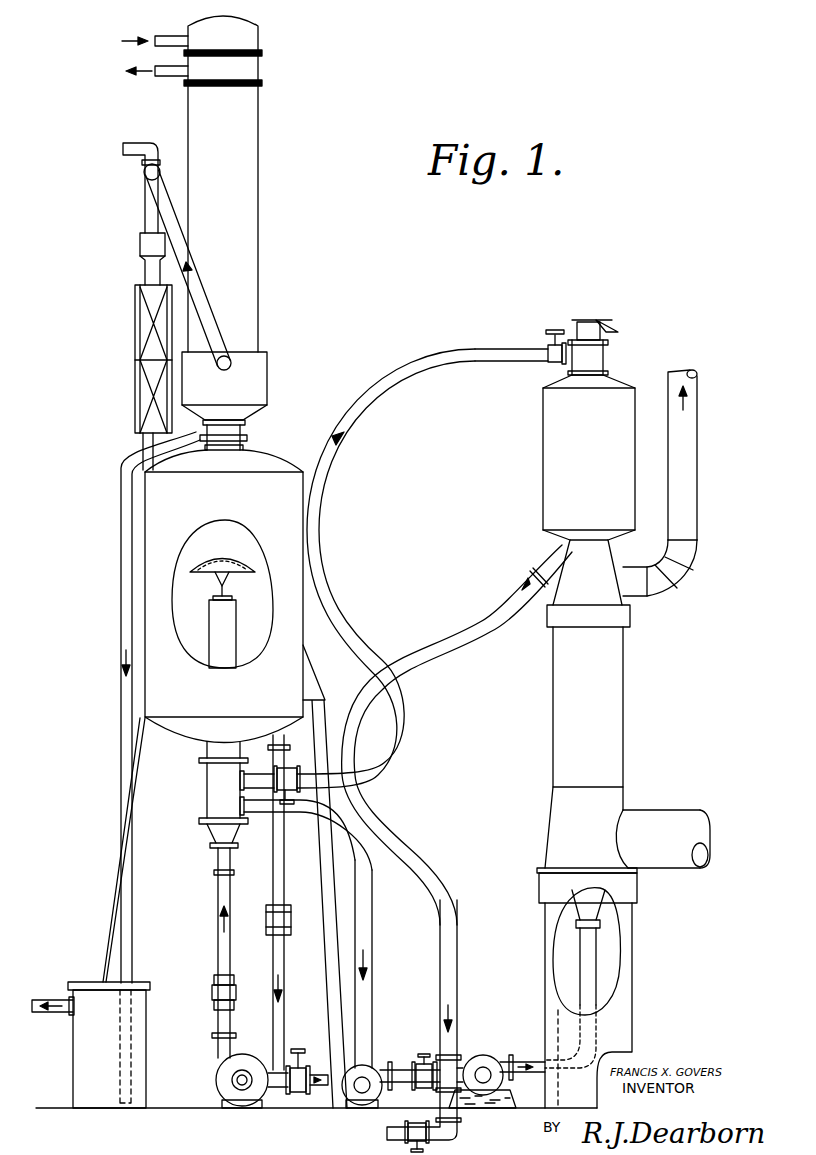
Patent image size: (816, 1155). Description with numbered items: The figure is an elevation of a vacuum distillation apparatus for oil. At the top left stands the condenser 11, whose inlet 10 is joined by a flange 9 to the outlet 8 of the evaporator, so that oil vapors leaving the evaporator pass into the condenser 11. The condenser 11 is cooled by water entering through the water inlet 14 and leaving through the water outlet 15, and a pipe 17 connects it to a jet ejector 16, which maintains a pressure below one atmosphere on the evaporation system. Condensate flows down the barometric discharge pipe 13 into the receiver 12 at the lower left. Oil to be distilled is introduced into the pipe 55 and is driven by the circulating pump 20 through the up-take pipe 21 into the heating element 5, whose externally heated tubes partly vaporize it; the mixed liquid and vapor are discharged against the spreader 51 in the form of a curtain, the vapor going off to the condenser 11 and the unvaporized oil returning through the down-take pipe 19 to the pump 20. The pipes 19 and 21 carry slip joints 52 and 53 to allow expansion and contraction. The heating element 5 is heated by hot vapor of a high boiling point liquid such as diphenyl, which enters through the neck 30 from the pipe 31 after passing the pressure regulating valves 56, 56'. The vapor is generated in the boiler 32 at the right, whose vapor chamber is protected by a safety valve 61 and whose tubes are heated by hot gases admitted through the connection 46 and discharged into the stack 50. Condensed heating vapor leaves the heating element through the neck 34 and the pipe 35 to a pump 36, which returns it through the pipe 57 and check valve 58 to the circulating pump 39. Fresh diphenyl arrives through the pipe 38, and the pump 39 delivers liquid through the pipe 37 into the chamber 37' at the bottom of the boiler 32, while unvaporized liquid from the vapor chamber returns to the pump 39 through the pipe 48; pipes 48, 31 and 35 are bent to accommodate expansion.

The heating element 5 is at (212, 622).
The outlet 8 is at (245, 450).
The flange 9 is at (247, 438).
The inlet 10 is at (244, 432).
The condenser 11 is at (247, 176).
The receiver 12 is at (88, 1046).
The barometric discharge pipe 13 is at (120, 570).
The water inlet 14 is at (176, 40).
The water outlet 15 is at (177, 72).
The jet ejector 16 is at (152, 207).
The pipe 17 is at (183, 250).
The down-take pipe 19 is at (280, 860).
The circulating pump 20 is at (222, 1077).
The up-take pipe 21 is at (222, 912).
The neck 30 is at (232, 777).
The pipe 31 is at (478, 360).
The boiler 32 is at (610, 670).
The neck 34 is at (232, 801).
The pipe 35 is at (374, 920).
The pump 36 is at (365, 1097).
The pipe 37 is at (616, 978).
The chamber 37' is at (634, 909).
The pipe 38 is at (448, 1104).
The circulating pump 39 is at (485, 1062).
The connection 46 is at (656, 815).
The pipe 48 is at (490, 628).
The stack 50 is at (686, 447).
The spreader 51 is at (228, 566).
The slip joint 52 is at (276, 926).
The slip joint 53 is at (218, 992).
The pipe 55 is at (298, 1095).
The valve 56 is at (340, 785).
The pressure regulating valve 56' is at (526, 330).
The pipe 57 is at (400, 1065).
The check valve 58 is at (424, 1117).
The safety valve 61 is at (592, 325).